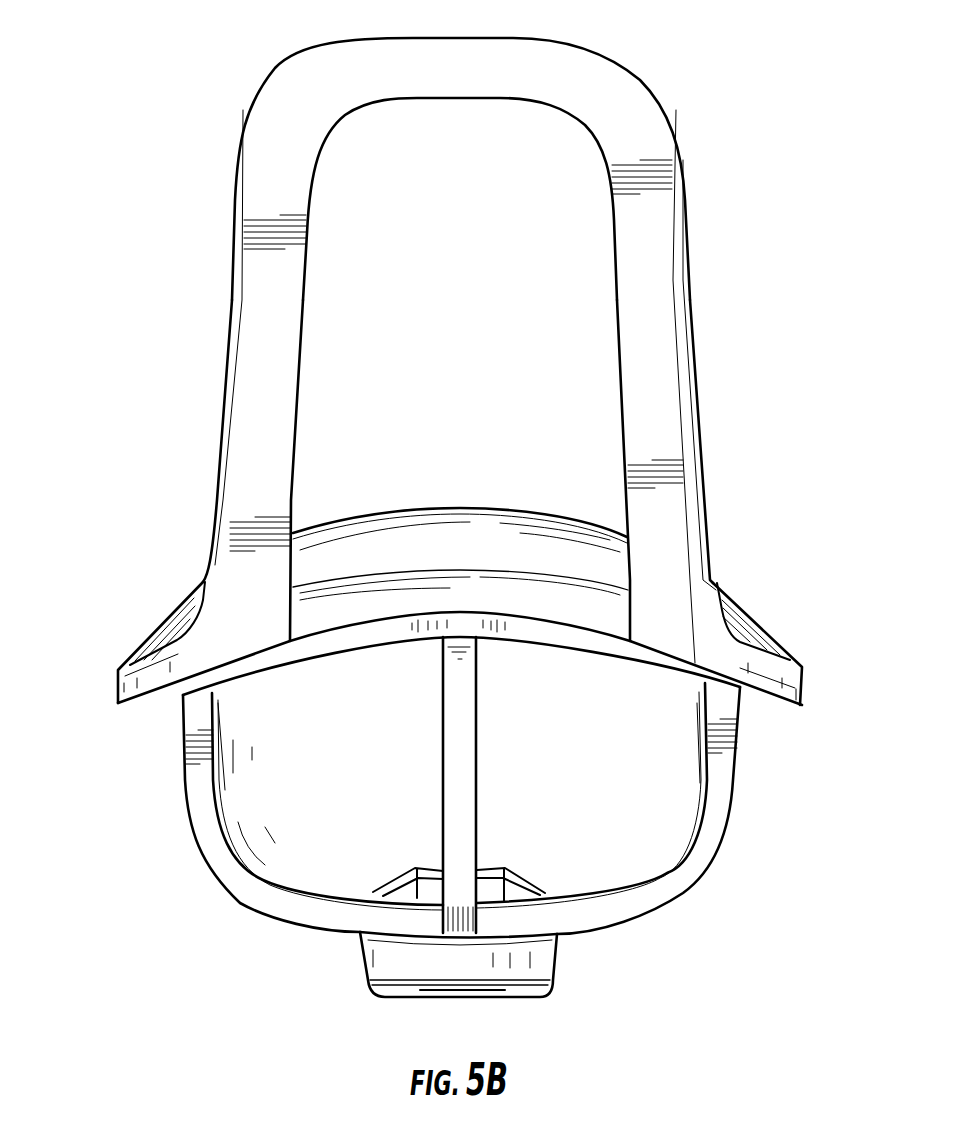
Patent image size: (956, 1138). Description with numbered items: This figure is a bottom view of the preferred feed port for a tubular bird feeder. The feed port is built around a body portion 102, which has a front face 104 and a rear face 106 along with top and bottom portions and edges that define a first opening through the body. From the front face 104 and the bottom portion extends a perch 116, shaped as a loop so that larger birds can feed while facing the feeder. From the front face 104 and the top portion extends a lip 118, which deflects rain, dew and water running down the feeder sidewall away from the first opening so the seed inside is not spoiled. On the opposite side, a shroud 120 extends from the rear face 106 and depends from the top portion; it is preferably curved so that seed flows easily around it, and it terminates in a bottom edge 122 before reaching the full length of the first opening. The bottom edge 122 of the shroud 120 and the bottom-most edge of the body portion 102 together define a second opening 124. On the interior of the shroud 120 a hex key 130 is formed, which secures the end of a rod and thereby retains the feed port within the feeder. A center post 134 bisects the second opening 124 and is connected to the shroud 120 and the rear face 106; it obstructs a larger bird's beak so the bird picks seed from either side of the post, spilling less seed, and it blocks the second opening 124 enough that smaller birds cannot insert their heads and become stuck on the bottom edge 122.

The body portion 102 is at (115, 687).
The front face 104 is at (178, 637).
The rear face 106 is at (765, 690).
The perch 116 is at (372, 43).
The lip 118 is at (475, 517).
The shroud 120 is at (737, 770).
The bottom edge 122 is at (207, 855).
The second opening 124 is at (627, 800).
The hex key 130 is at (528, 880).
The center post 134 is at (441, 750).